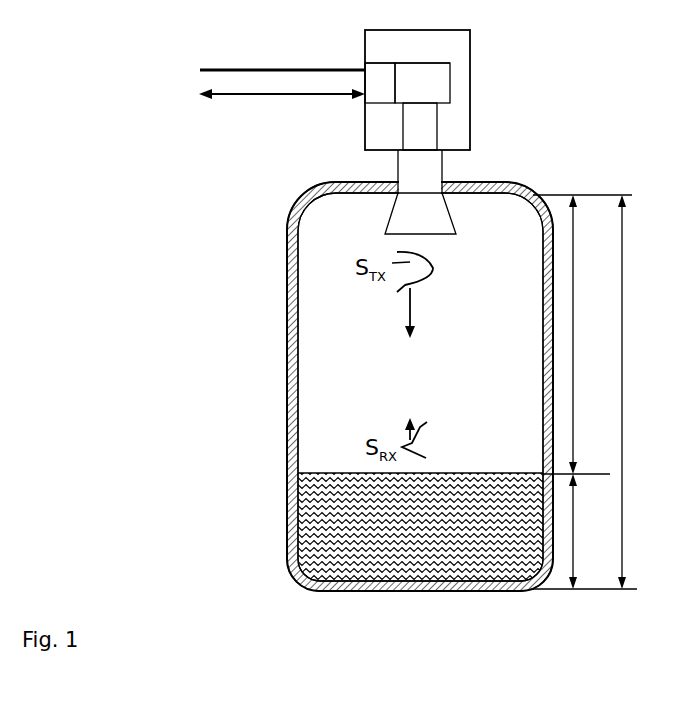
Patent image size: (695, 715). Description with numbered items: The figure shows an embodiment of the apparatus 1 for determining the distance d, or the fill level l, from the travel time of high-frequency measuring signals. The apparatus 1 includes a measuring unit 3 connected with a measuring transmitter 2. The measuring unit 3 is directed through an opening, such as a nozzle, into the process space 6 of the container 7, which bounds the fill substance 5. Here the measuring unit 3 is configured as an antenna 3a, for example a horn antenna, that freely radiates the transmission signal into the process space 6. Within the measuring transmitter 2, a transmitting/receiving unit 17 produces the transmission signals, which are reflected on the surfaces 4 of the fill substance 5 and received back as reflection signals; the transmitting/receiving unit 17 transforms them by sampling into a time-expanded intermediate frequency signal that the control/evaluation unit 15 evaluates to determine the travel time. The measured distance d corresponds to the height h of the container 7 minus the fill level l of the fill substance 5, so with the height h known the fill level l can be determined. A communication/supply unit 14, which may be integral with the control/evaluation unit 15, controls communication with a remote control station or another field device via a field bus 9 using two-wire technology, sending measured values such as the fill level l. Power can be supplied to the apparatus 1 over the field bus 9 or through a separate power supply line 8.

The apparatus 1 is at (517, 71).
The measuring transmitter 2 is at (466, 60).
The measuring unit 3 is at (420, 213).
The antenna 3a is at (448, 231).
The surfaces 4 is at (355, 472).
The fill substance 5 is at (318, 508).
The process space 6 is at (468, 220).
The container 7 is at (510, 188).
The power supply line 8 is at (283, 70).
The field bus 9 is at (297, 92).
The communication/supply unit 14 is at (392, 96).
The control/evaluation unit 15 is at (431, 96).
The transmitting/receiving unit 17 is at (432, 134).
The distance d is at (578, 303).
The height h is at (623, 305).
The fill level l is at (580, 513).